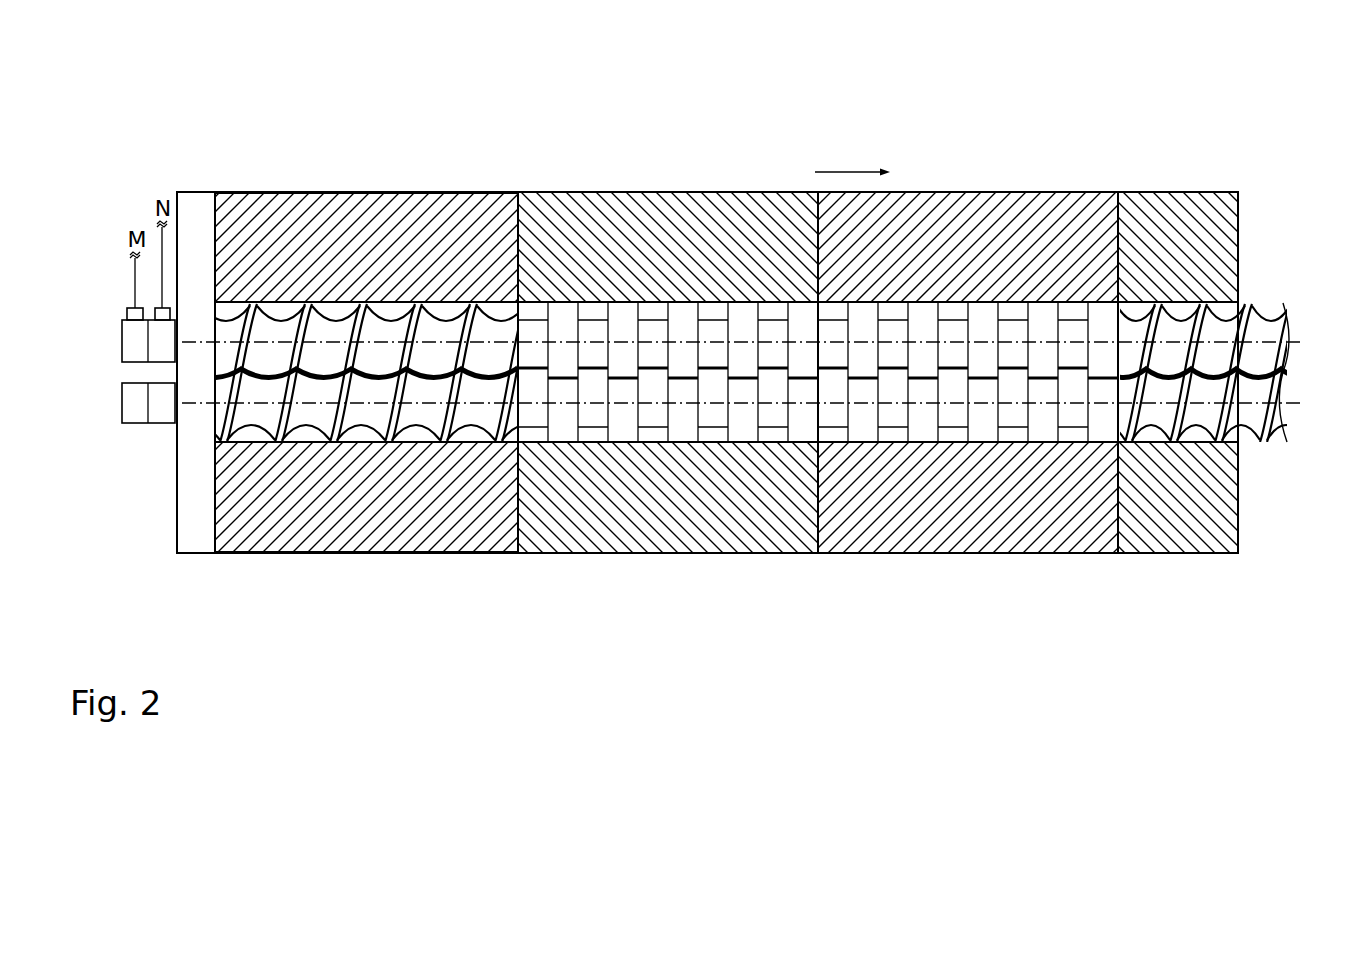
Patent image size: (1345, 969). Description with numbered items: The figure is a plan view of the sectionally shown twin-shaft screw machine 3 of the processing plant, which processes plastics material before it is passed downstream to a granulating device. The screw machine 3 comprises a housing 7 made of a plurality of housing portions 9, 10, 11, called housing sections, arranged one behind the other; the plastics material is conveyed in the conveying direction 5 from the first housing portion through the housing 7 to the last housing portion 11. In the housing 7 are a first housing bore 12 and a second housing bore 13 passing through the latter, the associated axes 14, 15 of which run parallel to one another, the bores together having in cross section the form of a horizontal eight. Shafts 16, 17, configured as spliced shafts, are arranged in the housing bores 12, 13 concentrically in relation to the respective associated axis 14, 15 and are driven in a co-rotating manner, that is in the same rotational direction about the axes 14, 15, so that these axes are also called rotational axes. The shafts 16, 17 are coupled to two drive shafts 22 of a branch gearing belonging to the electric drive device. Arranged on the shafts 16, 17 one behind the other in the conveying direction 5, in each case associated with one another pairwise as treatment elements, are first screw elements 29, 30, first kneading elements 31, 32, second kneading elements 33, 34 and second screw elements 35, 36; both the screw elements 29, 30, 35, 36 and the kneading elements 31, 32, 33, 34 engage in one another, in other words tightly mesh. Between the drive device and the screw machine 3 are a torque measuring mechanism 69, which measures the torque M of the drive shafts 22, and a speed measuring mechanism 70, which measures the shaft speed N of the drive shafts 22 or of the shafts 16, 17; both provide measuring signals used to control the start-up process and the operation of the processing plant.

The twin-shaft screw machine 3 is at (633, 130).
The conveying direction 5 is at (855, 170).
The housing 7 is at (197, 183).
The housing portion 9 is at (634, 562).
The housing portion 10 is at (1068, 562).
The housing portion 11 is at (1175, 562).
The first housing bore 12 is at (222, 438).
The second housing bore 13 is at (235, 302).
The axis 14 is at (330, 403).
The axis 15 is at (410, 337).
The shaft 16 is at (163, 403).
The shaft 17 is at (160, 346).
The drive shaft 22 is at (122, 393).
The first screw element 29 is at (430, 430).
The first screw element 30 is at (455, 312).
The first kneading element 31 is at (745, 442).
The first kneading element 32 is at (745, 300).
The second kneading element 33 is at (1047, 443).
The second kneading element 34 is at (1047, 305).
The second screw element 35 is at (1190, 424).
The second screw element 36 is at (1168, 312).
The torque measuring mechanism 69 is at (128, 313).
The speed measuring mechanism 70 is at (157, 308).